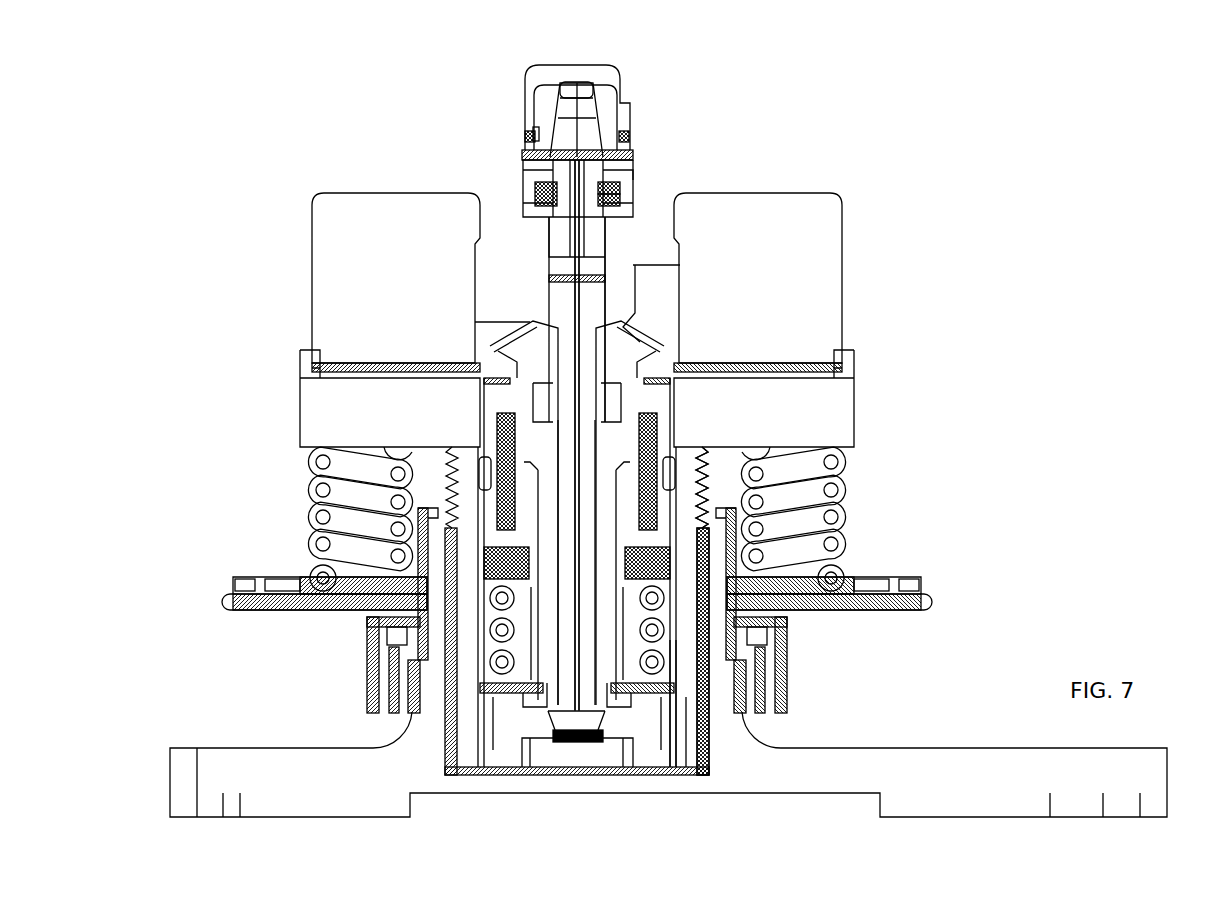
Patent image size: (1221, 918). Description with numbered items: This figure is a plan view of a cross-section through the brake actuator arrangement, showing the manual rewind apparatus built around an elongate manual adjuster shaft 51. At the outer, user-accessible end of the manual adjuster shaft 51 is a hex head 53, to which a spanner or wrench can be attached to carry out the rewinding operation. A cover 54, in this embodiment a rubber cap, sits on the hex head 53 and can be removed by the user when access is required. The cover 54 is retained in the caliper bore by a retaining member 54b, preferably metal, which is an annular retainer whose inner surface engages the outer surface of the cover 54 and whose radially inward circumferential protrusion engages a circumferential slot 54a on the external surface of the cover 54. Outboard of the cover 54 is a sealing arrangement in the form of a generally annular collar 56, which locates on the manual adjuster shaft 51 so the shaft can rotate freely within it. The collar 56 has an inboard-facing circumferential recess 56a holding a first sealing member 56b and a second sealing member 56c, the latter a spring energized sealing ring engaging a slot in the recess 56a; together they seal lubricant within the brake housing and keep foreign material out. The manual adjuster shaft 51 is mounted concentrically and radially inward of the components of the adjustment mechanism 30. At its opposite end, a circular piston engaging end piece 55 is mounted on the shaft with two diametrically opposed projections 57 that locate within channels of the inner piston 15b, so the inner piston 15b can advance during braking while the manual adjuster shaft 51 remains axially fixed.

The inner piston 15b is at (683, 702).
The adjustment mechanism 30 is at (700, 488).
The manual adjuster shaft 51 is at (585, 711).
The hex head 53 is at (587, 100).
The cover 54 is at (537, 73).
The circumferential slot 54a is at (539, 131).
The retaining member 54b is at (528, 138).
The piston engaging end piece 55 is at (558, 753).
The collar 56 is at (537, 202).
The circumferential recess 56a is at (613, 188).
The first sealing member 56b is at (615, 202).
The second sealing member 56c is at (613, 170).
The projections 57 is at (523, 753).